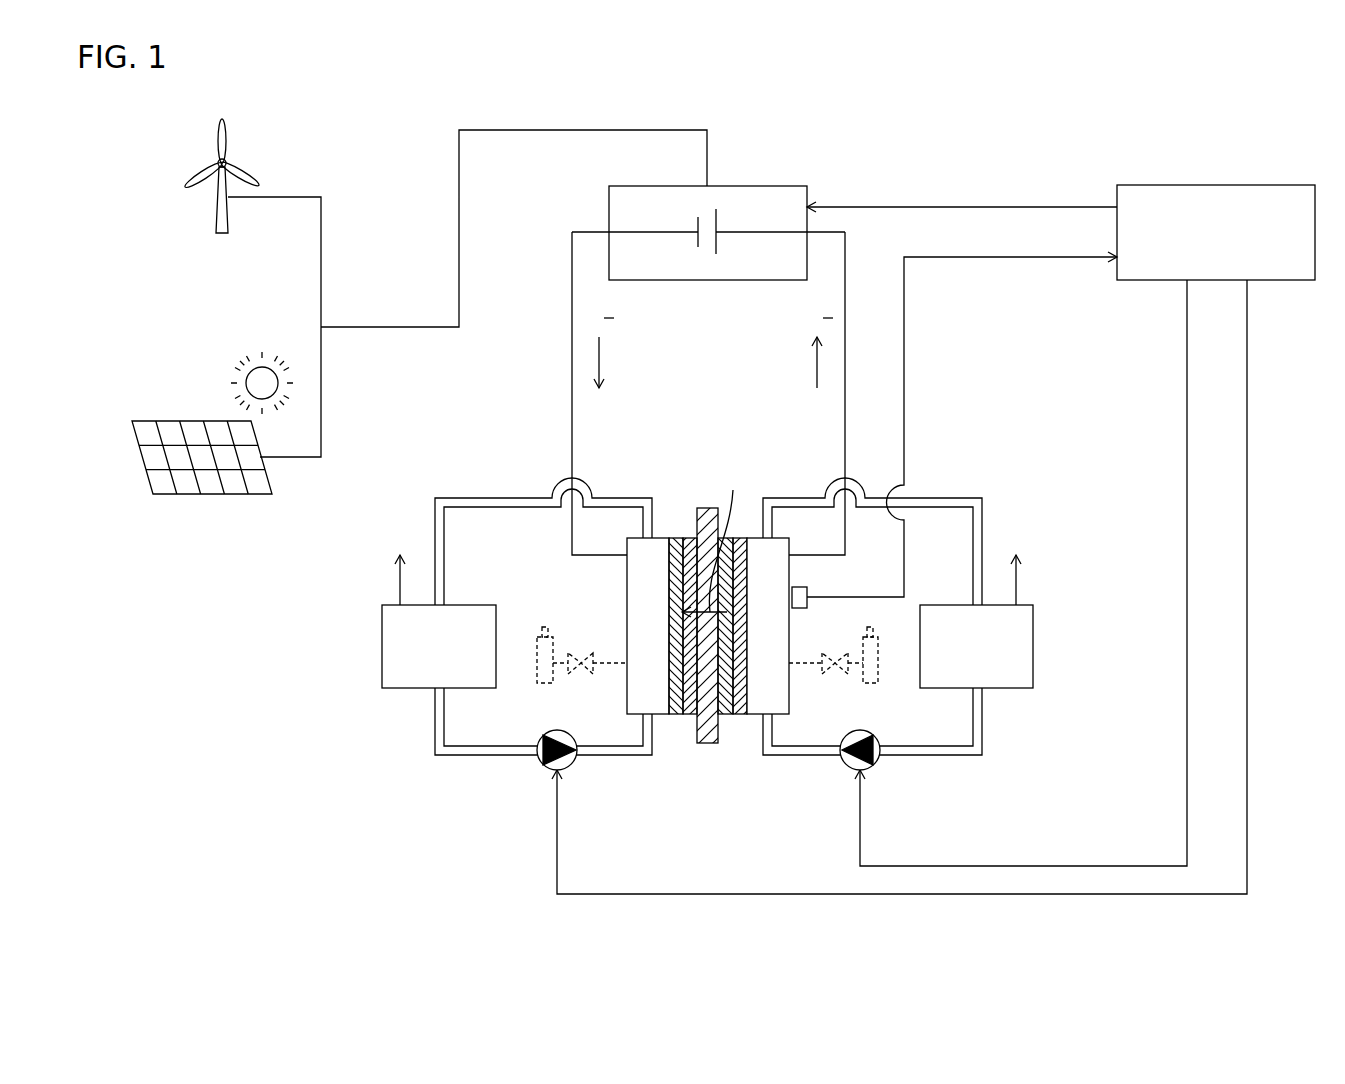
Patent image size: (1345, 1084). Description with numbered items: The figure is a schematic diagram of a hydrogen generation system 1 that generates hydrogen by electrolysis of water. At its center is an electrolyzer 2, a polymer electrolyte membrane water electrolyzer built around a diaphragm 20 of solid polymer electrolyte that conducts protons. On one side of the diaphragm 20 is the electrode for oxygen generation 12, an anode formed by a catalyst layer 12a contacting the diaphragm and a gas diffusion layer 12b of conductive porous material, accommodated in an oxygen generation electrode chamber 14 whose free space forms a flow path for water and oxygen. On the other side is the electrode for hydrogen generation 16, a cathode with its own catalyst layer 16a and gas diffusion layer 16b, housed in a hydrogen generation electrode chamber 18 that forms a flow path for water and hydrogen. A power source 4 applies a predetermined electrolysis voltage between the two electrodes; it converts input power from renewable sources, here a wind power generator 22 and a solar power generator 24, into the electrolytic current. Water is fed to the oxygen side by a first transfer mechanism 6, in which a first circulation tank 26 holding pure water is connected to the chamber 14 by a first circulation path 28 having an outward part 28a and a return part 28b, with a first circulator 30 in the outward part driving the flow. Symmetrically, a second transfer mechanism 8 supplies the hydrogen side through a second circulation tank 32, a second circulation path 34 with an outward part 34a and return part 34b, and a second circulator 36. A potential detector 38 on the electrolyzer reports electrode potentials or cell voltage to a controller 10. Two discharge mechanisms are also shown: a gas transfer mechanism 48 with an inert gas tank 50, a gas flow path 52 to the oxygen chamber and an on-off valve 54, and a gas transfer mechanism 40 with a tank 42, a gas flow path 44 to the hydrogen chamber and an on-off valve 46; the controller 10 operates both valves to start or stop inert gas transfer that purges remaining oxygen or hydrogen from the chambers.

The hydrogen generation system 1 is at (722, 960).
The electrolyzer 2 is at (711, 660).
The power source 4 is at (773, 185).
The first transfer mechanism 6 is at (933, 632).
The second transfer mechanism 8 is at (481, 632).
The controller 10 is at (1282, 183).
The electrode for oxygen generation 12 is at (775, 698).
The catalyst layer 12a is at (725, 716).
The gas diffusion layer 12b is at (743, 716).
The oxygen generation electrode chamber 14 is at (778, 722).
The electrode for hydrogen generation 16 is at (649, 698).
The catalyst layer 16a is at (690, 716).
The gas diffusion layer 16b is at (672, 716).
The hydrogen generation electrode chamber 18 is at (628, 718).
The diaphragm 20 is at (706, 745).
The wind power generator 22 is at (252, 153).
The solar power generator 24 is at (262, 503).
The first circulation tank 26 is at (1035, 650).
The first circulation path 28 is at (914, 588).
The outward part 28a is at (982, 723).
The return part 28b is at (982, 517).
The first circulator 30 is at (868, 733).
The second circulation tank 32 is at (382, 652).
The second circulation path 34 is at (501, 588).
The outward part 34a is at (435, 722).
The return part 34b is at (435, 517).
The second circulator 36 is at (550, 733).
The potential detector 38 is at (808, 590).
The gas transfer mechanism 40 is at (563, 616).
The tank 42 is at (538, 637).
The gas flow path 44 is at (615, 660).
The on-off valve 46 is at (582, 655).
The gas transfer mechanism 48 is at (865, 622).
The tank 50 is at (878, 660).
The gas flow path 52 is at (806, 660).
The on-off valve 54 is at (838, 655).